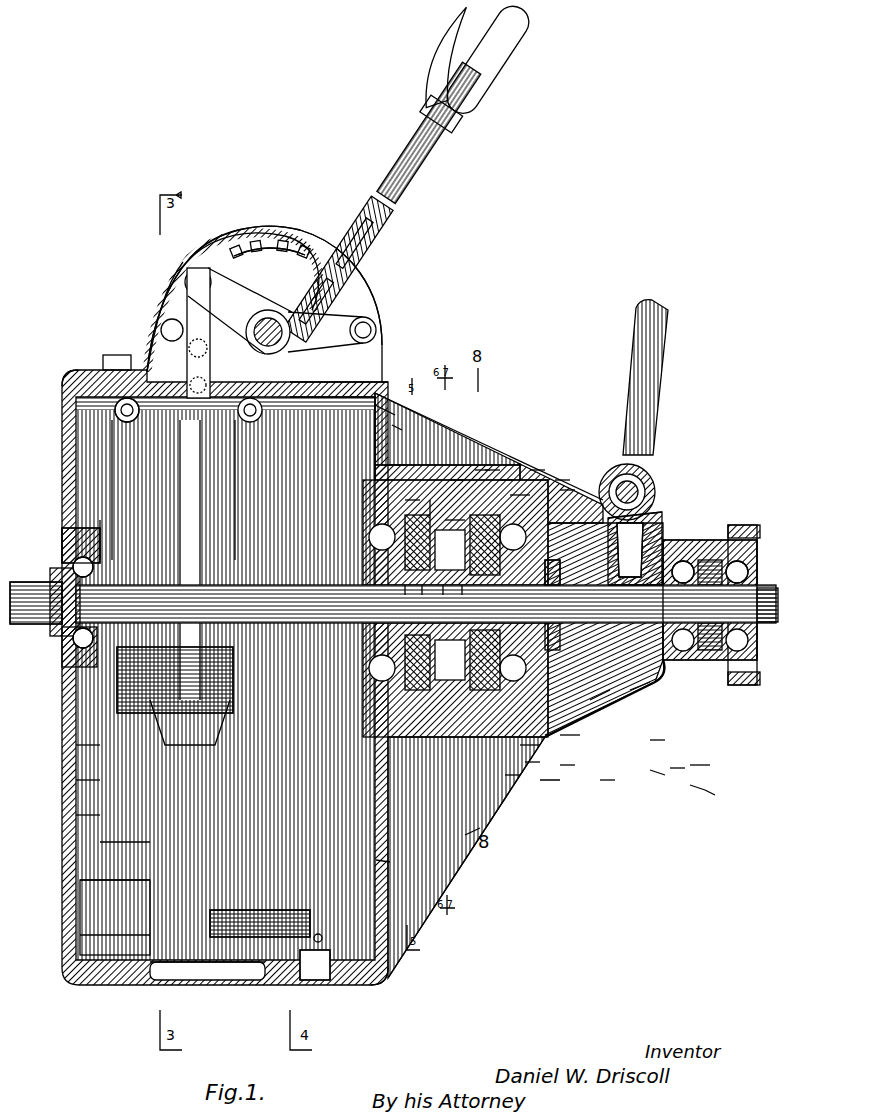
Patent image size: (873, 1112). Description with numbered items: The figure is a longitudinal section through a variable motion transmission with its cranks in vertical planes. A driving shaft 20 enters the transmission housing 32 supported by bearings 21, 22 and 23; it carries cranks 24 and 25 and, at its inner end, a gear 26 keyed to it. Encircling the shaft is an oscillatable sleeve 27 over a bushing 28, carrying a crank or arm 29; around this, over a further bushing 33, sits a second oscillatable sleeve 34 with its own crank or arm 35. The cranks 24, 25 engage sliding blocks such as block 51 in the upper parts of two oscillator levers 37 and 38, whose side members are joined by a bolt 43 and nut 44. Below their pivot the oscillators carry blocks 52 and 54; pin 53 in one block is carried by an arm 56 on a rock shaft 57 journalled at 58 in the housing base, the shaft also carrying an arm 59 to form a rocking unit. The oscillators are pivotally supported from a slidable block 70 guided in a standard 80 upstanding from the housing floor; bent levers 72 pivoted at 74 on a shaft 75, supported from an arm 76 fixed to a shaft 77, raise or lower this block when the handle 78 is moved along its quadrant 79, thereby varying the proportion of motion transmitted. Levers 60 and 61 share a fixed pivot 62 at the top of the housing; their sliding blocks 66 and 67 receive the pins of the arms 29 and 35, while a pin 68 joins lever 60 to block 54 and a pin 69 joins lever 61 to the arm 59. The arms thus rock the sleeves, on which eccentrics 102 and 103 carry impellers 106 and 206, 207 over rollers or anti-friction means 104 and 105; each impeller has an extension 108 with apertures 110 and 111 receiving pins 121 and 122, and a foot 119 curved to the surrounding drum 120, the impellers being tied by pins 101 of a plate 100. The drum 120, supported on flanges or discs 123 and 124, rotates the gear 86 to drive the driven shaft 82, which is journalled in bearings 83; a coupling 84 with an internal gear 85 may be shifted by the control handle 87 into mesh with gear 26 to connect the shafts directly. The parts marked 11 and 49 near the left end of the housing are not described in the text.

The bearing 11 is at (128, 642).
The driving shaft 20 is at (30, 622).
The bearing 21 is at (72, 568).
The bearing 22 is at (392, 468).
The bearing 23 is at (518, 495).
The crank 24 is at (72, 535).
The crank 25 is at (165, 665).
The gear 26 is at (662, 680).
The oscillatable sleeve 27 is at (464, 598).
The bushing 28 is at (445, 598).
The crank or arm 29 is at (610, 780).
The transmission housing 32 is at (350, 380).
The bushing 33 is at (424, 599).
The oscillatable sleeve 34 is at (407, 599).
The crank or arm 35 is at (570, 766).
The lever 37 is at (110, 465).
The lever 38 is at (235, 494).
The bolt 43 is at (115, 418).
The nut 44 is at (60, 398).
The plate 49 is at (105, 528).
The block 51 is at (512, 776).
The block 52 is at (72, 750).
The pin 53 is at (74, 780).
The block 54 is at (76, 816).
The arm 56 is at (95, 878).
The rock shaft 57 is at (115, 935).
The pin 58 is at (160, 935).
The arm 59 is at (345, 945).
The lever 60 is at (385, 415).
The lever 61 is at (396, 425).
The fixed pivot 62 is at (388, 395).
The block 66 is at (640, 690).
The block 67 is at (535, 763).
The pin 68 is at (382, 860).
The pin 69 is at (470, 838).
The slidable block 70 is at (155, 708).
The bent levers 72 is at (196, 312).
The pivot 74 is at (190, 258).
The shaft 75 is at (190, 283).
The arm 76 is at (243, 295).
The shaft 77 is at (290, 330).
The handle 78 is at (405, 186).
The quadrant 79 is at (368, 278).
The standard 80 is at (100, 842).
The driven shaft 82 is at (666, 540).
The bearings 83 is at (735, 560).
The coupling 84 is at (630, 465).
The internal gear 85 is at (560, 580).
The gear 86 is at (665, 520).
The control handle 87 is at (652, 410).
The plate 100 is at (430, 500).
The pins 101 is at (455, 518).
The eccentric 102 is at (567, 737).
The eccentric 103 is at (658, 740).
The rollers or anti-friction means 104 is at (678, 770).
The rollers or anti-friction means 105 is at (700, 766).
The impeller 106 is at (530, 746).
The extension 108 is at (655, 772).
The aperture 110 is at (458, 480).
The aperture 111 is at (698, 788).
The foot 119 is at (492, 470).
The drum 120 is at (507, 480).
The pin 121 is at (482, 470).
The pin 122 is at (712, 792).
The flange or disc 123 is at (408, 500).
The flange or disc 124 is at (562, 480).
The impeller 206 is at (537, 470).
The impeller 207 is at (567, 490).